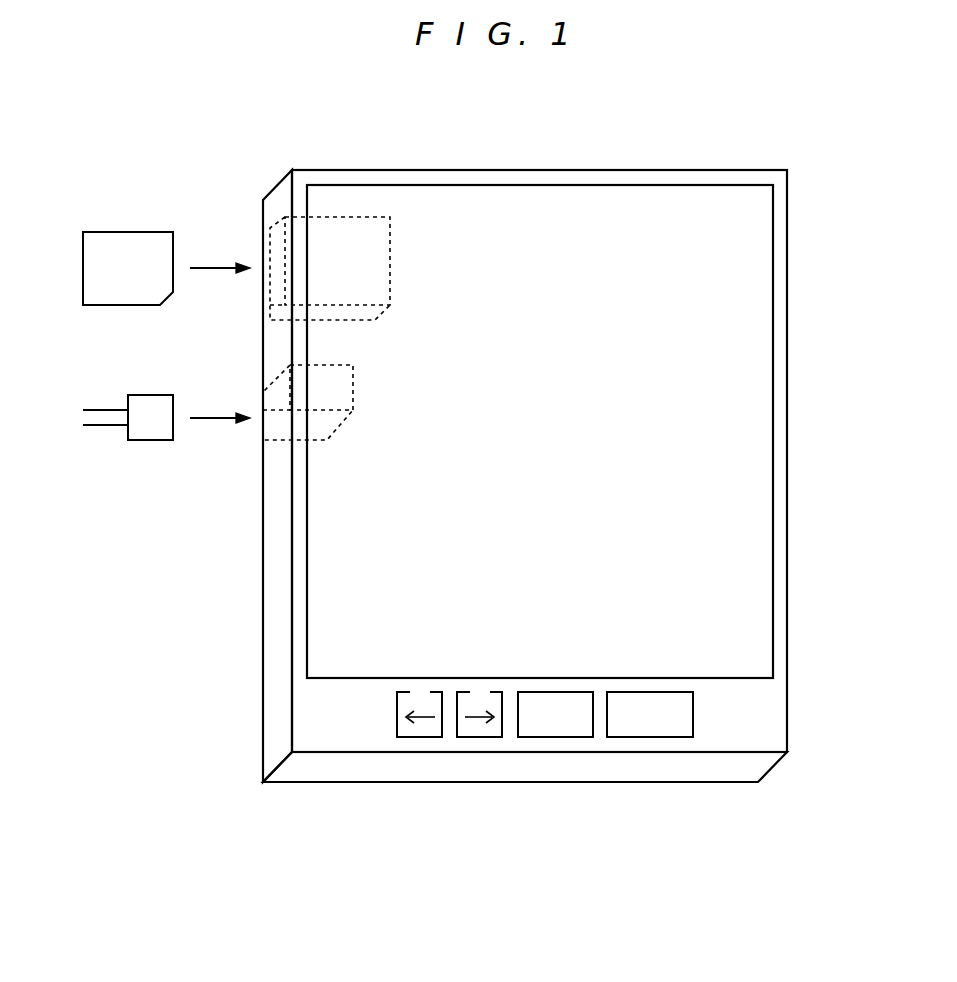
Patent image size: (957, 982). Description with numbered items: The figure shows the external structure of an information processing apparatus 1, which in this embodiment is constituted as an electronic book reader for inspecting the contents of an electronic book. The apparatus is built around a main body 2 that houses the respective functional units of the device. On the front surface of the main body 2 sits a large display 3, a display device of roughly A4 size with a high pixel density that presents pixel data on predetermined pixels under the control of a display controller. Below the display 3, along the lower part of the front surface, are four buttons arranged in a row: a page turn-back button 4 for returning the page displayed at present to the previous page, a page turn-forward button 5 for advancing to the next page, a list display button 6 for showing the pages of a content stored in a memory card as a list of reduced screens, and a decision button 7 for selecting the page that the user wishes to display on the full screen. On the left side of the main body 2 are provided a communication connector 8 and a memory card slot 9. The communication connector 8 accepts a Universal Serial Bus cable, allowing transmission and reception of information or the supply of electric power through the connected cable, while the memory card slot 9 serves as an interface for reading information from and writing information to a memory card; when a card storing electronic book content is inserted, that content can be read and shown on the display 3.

The information processing apparatus 1 is at (136, 830).
The main body 2 is at (770, 712).
The display 3 is at (763, 237).
The page turn-back button 4 is at (410, 735).
The page turn-forward button 5 is at (470, 735).
The list display button 6 is at (545, 735).
The decision button 7 is at (635, 735).
The communication connector 8 is at (273, 420).
The memory card slot 9 is at (273, 285).